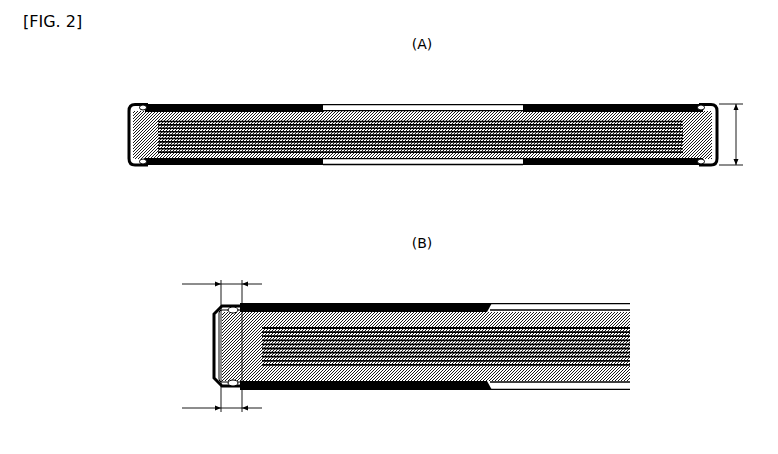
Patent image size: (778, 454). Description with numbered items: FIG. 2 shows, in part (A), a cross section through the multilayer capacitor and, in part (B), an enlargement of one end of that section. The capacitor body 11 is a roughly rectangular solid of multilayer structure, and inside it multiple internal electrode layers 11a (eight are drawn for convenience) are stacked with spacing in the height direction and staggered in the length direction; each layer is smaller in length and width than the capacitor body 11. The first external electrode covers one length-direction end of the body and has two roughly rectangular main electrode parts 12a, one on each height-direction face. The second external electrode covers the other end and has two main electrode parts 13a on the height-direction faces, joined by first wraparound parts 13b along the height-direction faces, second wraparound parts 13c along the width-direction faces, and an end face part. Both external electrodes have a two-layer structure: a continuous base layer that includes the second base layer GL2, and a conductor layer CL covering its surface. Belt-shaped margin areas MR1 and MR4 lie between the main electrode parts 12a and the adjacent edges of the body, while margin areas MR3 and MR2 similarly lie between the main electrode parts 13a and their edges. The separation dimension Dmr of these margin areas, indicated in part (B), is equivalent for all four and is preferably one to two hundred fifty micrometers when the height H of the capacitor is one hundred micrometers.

The capacitor body 11 is at (422, 108).
The internal electrode layers 11a is at (482, 124).
The main electrode parts 12a is at (235, 104).
The main electrode parts 13a is at (236, 165).
The first wraparound parts 13b is at (368, 104).
The second wraparound parts 13c is at (127, 131).
The conductor layer CL is at (160, 104).
The second base layer GL2 is at (197, 104).
The first margin area MR1 is at (143, 104).
The second margin area MR2 is at (143, 165).
The third margin area MR3 is at (702, 104).
The fourth margin area MR4 is at (702, 165).
The height H is at (734, 134).
The separation dimension Dmr is at (222, 347).